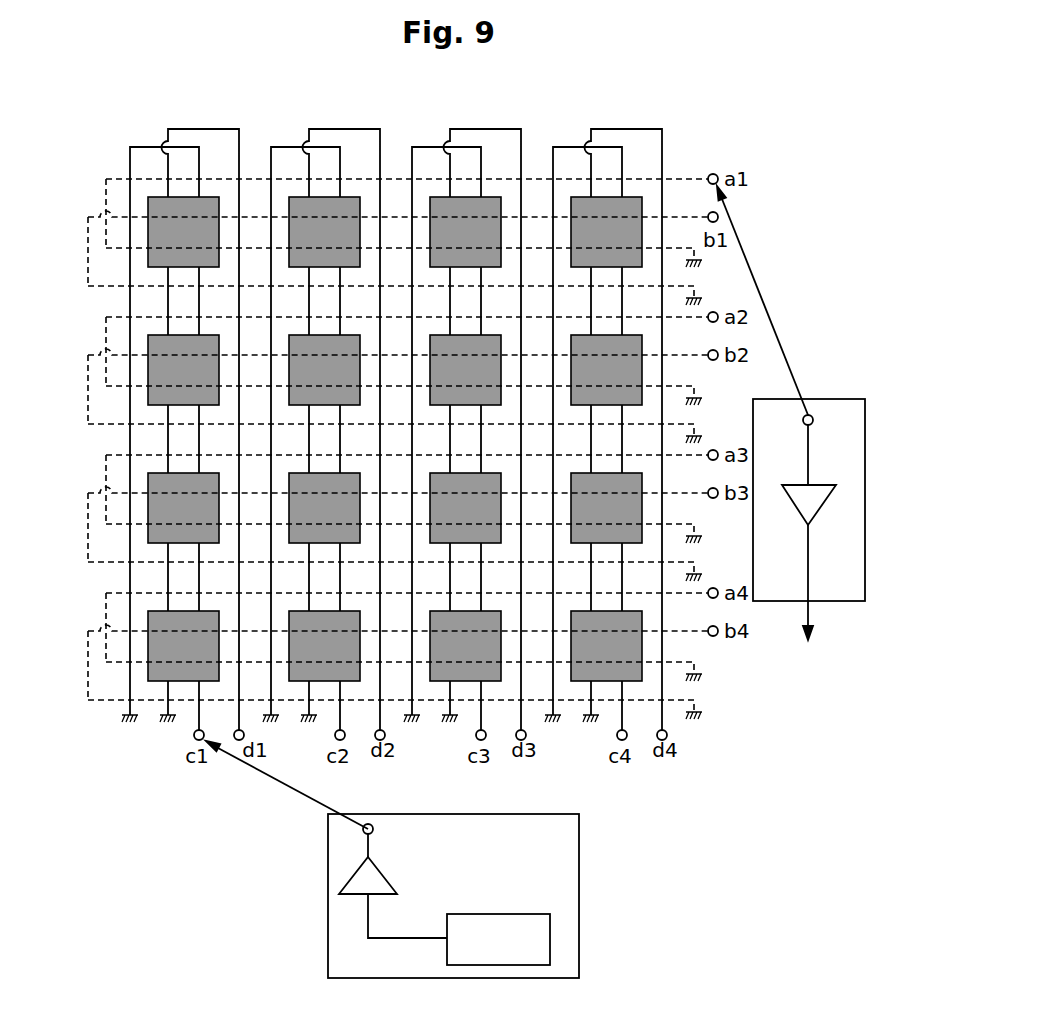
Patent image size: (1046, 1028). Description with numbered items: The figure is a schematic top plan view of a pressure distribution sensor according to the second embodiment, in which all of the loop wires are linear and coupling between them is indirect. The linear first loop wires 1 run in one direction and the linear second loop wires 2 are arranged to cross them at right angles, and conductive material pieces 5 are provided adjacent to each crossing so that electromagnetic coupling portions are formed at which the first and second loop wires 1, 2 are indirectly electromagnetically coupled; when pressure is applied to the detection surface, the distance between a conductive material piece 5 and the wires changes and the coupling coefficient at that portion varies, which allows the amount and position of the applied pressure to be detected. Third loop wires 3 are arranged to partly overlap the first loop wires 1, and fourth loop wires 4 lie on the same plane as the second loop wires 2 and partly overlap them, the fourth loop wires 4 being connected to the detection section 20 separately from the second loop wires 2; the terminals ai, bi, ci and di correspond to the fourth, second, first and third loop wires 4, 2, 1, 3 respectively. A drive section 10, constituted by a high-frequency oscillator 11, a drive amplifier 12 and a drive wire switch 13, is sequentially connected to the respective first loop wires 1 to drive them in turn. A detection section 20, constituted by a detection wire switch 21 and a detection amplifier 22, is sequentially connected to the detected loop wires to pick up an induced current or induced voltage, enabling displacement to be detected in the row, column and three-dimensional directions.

The first loop wire 1 is at (142, 146).
The second loop wire 2 is at (88, 254).
The third loop wire 3 is at (206, 129).
The fourth loop wire 4 is at (106, 191).
The conductive material piece 5 is at (345, 205).
The drive section 10 is at (490, 896).
The high-frequency oscillator 11 is at (551, 938).
The drive amplifier 12 is at (393, 880).
The drive wire switch 13 is at (376, 828).
The detection section 20 is at (831, 513).
The detection wire switch 21 is at (812, 414).
The detection amplifier 22 is at (822, 513).